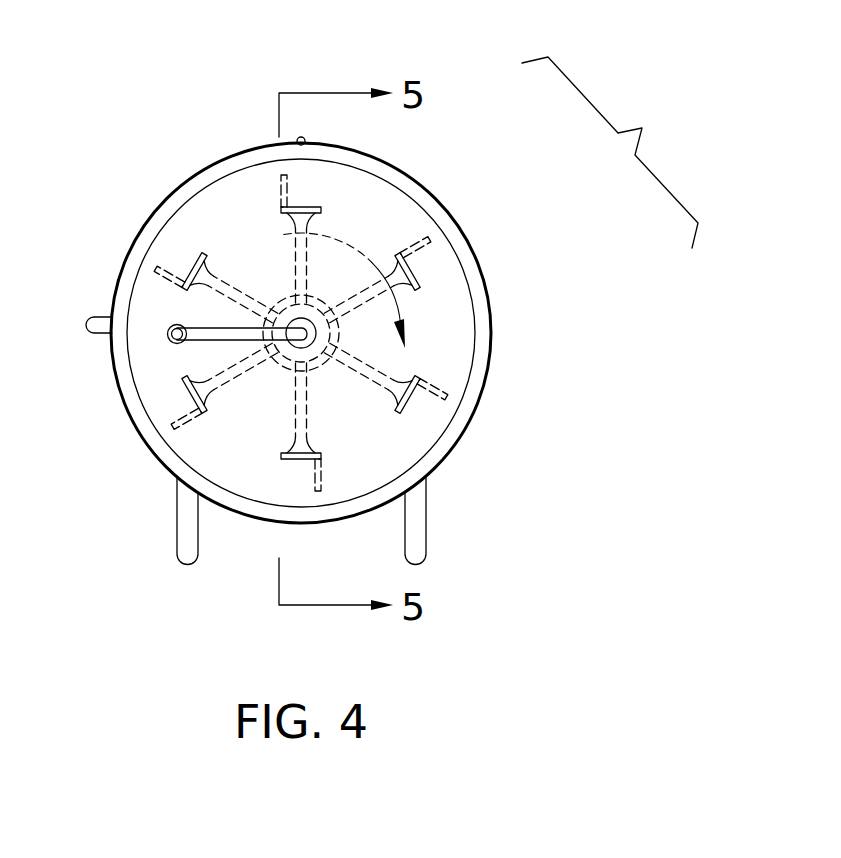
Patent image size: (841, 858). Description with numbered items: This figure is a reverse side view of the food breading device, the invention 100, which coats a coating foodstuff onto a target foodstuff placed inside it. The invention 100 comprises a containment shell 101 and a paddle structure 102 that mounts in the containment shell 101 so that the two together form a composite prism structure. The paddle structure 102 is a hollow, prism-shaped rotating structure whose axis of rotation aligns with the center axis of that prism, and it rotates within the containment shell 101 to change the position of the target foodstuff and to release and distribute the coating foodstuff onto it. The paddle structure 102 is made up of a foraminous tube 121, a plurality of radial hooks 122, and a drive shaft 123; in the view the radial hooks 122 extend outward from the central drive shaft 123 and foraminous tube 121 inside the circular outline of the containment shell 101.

The invention 100 is at (110, 87).
The containment shell 101 is at (453, 455).
The paddle structure 102 is at (642, 128).
The foraminous tube 121 is at (338, 332).
The radial hooks 122 is at (428, 268).
The drive shaft 123 is at (305, 333).